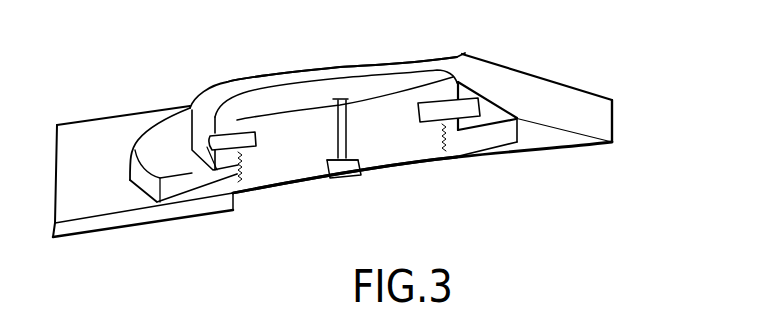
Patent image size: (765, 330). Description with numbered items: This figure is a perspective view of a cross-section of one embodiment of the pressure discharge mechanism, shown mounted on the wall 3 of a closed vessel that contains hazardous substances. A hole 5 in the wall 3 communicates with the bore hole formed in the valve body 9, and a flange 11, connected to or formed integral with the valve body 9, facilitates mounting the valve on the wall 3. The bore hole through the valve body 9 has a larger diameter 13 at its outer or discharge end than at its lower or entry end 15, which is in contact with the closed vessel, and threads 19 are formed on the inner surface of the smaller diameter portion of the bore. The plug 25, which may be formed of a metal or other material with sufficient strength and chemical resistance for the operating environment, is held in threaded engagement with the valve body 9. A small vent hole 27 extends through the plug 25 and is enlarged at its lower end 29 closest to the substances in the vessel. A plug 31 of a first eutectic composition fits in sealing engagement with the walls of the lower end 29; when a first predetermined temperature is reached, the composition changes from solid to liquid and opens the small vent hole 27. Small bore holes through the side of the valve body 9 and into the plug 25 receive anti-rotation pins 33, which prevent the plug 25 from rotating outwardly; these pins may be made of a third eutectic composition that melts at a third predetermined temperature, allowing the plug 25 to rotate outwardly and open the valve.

The wall 3 is at (123, 143).
The hole 5 is at (247, 200).
The valve body 9 is at (450, 80).
The flange 11 is at (173, 190).
The larger diameter 13 is at (375, 97).
The entry end 15 is at (290, 185).
The threads 19 is at (614, 142).
The plug 25 is at (268, 107).
The small vent hole 27 is at (348, 132).
The lower end 29 is at (343, 167).
The plug 31 is at (350, 170).
The anti-rotation pins 33 is at (212, 150).